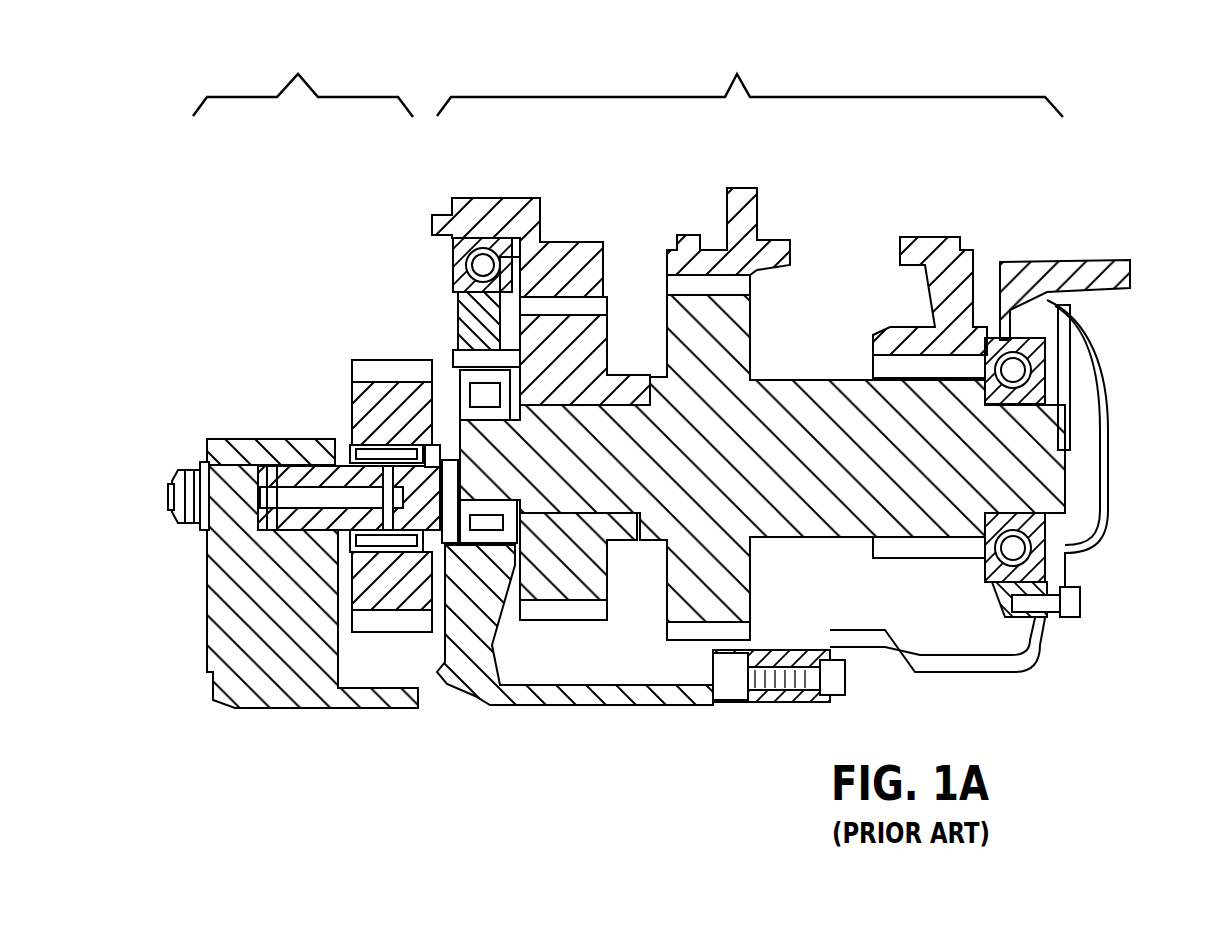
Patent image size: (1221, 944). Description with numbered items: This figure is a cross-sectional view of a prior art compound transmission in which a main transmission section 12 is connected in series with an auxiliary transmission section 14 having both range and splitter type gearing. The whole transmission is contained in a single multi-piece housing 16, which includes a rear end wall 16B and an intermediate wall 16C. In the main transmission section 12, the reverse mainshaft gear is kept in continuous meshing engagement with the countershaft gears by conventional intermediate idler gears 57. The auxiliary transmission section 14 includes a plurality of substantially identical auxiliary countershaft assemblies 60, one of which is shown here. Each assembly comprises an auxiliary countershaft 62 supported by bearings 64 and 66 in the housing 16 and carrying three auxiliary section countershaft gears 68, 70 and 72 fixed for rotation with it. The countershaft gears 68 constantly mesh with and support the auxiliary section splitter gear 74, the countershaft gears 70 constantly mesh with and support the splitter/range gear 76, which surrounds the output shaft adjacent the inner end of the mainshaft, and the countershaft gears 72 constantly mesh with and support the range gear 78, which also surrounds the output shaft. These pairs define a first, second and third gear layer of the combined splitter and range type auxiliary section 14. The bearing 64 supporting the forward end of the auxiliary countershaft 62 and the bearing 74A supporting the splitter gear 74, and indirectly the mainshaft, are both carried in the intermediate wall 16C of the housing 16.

The main transmission section 12 is at (303, 75).
The auxiliary transmission section 14 is at (1192, 200).
The housing 16 is at (222, 628).
The rear end wall 16B is at (1030, 660).
The intermediate wall 16C is at (485, 628).
The intermediate idler gear 57 is at (403, 600).
The auxiliary countershaft assembly 60 is at (810, 272).
The auxiliary countershaft 62 is at (825, 512).
The bearing 64 is at (470, 385).
The bearing 66 is at (1040, 365).
The auxiliary section countershaft gear 68 is at (566, 585).
The auxiliary section countershaft gear 70 is at (718, 578).
The auxiliary section countershaft gear 72 is at (925, 545).
The auxiliary section splitter gear 74 is at (575, 275).
The bearing 74A is at (470, 262).
The auxiliary section splitter/range gear 76 is at (665, 270).
The auxiliary section range gear 78 is at (960, 265).